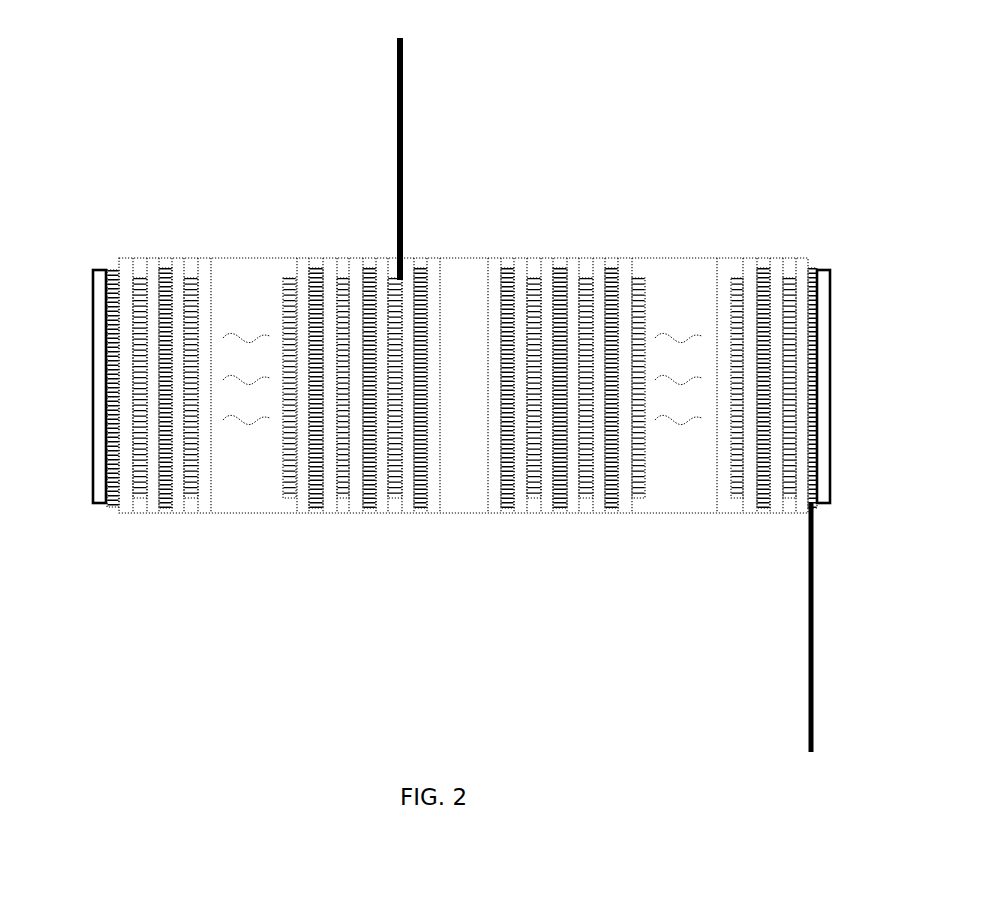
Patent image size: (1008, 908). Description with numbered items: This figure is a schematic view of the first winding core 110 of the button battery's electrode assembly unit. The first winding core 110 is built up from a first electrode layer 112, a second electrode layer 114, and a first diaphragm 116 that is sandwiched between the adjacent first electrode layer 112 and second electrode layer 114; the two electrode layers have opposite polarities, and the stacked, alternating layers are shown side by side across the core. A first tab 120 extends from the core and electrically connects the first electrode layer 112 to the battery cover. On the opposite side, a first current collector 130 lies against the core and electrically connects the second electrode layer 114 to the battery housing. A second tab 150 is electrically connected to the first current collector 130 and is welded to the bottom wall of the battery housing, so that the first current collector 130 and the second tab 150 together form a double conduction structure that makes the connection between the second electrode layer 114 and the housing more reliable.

The first winding core 110 is at (455, 517).
The first electrode layer 112 is at (138, 298).
The second electrode layer 114 is at (103, 270).
The first diaphragm 116 is at (128, 277).
The first tab 120 is at (403, 187).
The first current collector 130 is at (820, 372).
The second tab 150 is at (805, 630).